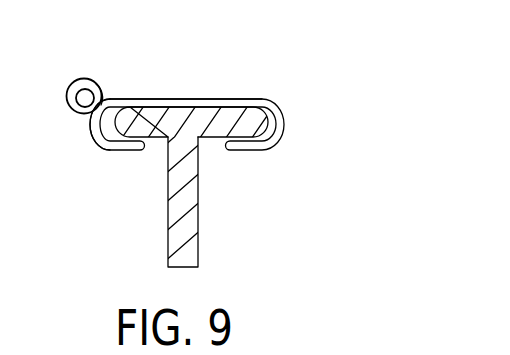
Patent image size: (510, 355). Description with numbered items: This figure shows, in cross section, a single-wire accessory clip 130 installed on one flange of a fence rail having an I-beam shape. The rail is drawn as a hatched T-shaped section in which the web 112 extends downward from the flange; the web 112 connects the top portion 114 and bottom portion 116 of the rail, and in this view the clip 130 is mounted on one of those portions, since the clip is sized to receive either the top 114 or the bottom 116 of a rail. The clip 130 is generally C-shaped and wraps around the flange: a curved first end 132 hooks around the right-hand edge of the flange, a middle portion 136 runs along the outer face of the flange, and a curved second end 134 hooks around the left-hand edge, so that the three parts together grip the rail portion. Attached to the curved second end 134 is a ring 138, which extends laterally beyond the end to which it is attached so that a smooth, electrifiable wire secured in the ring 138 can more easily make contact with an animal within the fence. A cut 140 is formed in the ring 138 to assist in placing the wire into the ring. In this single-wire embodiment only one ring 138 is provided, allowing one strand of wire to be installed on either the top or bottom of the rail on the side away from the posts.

The web 112 is at (198, 229).
The top portion 114 is at (205, 176).
The bottom portion 116 is at (161, 140).
The clip 130 is at (292, 95).
The curved first end 132 is at (283, 128).
The curved second end 134 is at (101, 151).
The middle portion 136 is at (205, 99).
The ring 138 is at (97, 83).
The cut 140 is at (83, 87).